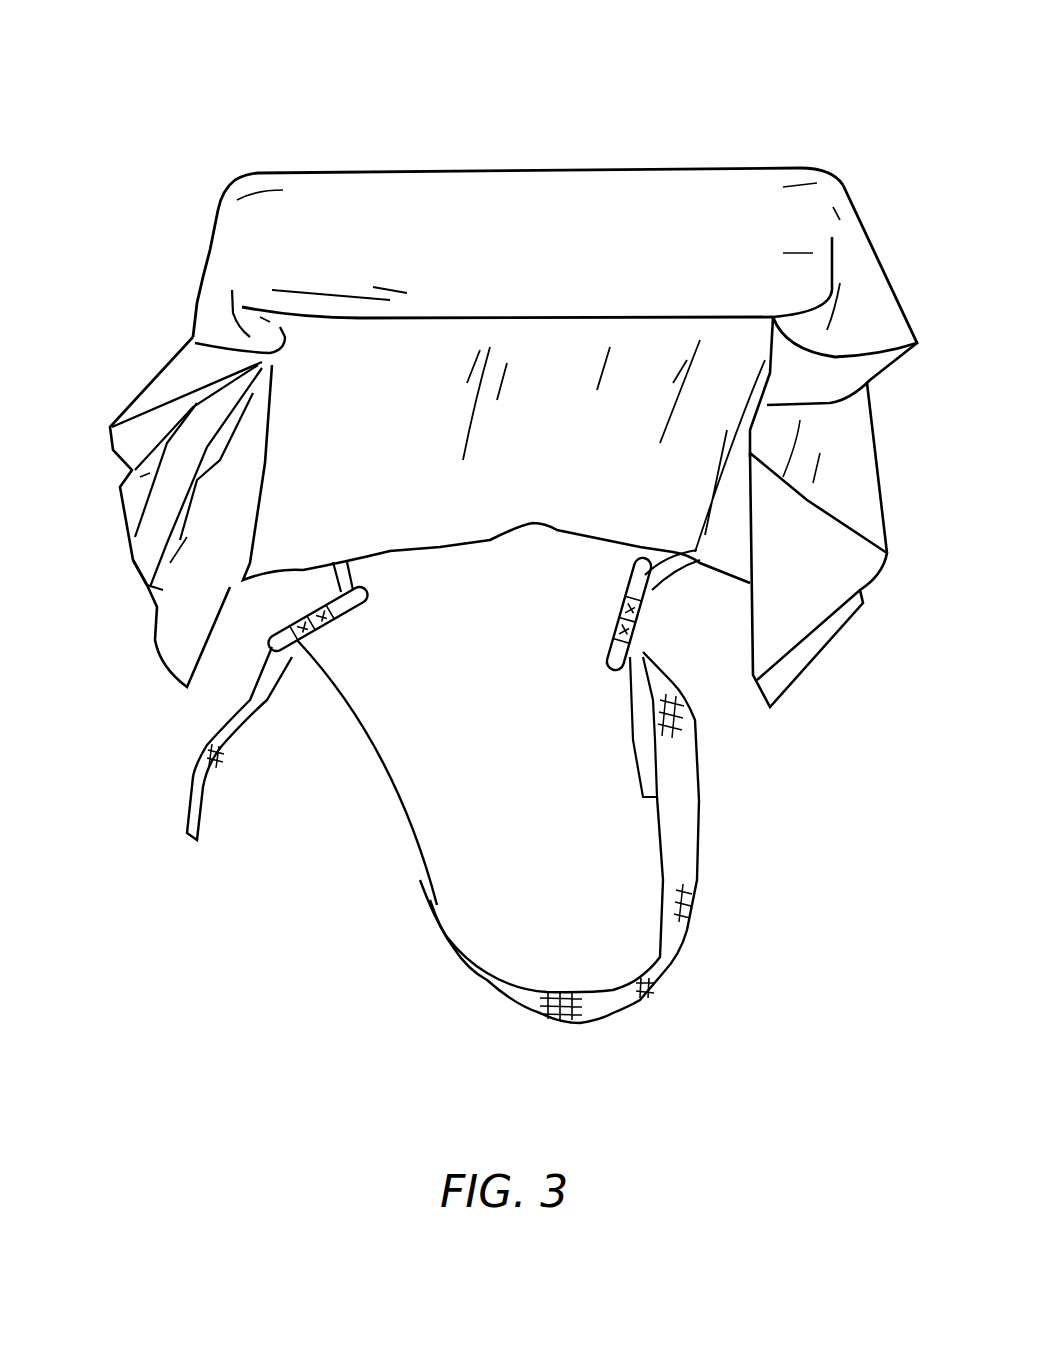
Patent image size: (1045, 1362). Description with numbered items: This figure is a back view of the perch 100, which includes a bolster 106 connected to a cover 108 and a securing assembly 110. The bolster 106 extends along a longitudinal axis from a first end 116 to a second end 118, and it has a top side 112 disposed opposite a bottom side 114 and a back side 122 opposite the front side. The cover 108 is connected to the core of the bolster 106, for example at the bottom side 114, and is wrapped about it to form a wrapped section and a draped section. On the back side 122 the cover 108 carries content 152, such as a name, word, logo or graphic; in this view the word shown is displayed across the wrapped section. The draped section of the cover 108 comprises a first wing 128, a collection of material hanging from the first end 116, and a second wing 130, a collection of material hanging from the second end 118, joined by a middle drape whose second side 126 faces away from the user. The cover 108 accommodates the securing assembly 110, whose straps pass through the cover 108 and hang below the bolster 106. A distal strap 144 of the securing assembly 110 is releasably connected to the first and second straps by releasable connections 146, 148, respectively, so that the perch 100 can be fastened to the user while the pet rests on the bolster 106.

The perch 100 is at (736, 60).
The bolster 106 is at (130, 233).
The cover 108 is at (116, 768).
The securing assembly 110 is at (358, 914).
The top side 112 is at (287, 175).
The bottom side 114 is at (360, 320).
The first end 116 is at (832, 237).
The second end 118 is at (228, 270).
The back side 122 is at (802, 237).
The second side 126 is at (462, 505).
The first wing 128 is at (807, 660).
The second wing 130 is at (130, 566).
The distal strap 144 is at (640, 1000).
The releasable connection 146 is at (612, 660).
The releasable connection 148 is at (330, 620).
The content 152 is at (523, 203).